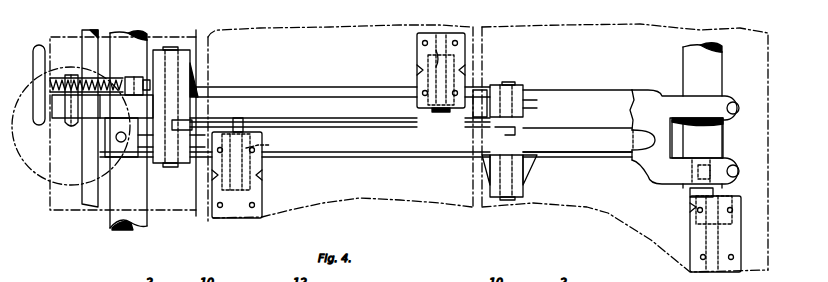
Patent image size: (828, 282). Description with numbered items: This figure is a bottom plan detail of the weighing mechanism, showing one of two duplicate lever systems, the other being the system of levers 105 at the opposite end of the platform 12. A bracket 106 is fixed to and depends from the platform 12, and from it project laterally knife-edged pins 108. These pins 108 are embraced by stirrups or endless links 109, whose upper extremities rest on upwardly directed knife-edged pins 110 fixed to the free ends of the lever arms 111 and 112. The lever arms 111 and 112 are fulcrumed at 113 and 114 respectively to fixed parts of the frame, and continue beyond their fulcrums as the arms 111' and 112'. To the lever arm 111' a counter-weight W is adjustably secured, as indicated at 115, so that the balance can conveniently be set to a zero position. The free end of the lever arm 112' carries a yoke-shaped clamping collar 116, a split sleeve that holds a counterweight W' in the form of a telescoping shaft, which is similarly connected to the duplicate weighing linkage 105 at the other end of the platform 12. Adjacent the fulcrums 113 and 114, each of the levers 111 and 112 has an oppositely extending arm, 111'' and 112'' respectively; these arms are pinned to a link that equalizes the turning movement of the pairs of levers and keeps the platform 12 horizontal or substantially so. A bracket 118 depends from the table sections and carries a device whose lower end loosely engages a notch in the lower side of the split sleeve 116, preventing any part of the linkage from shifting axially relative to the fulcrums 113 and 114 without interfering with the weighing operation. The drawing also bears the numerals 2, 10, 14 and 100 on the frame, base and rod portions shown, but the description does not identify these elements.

The frame section 2 is at (180, 208).
The frame 10 is at (205, 38).
The platform 12 is at (304, 202).
The rod 14 is at (112, 222).
The plate 100 is at (85, 204).
The system of levers 105 is at (415, 108).
The bracket 106 is at (256, 192).
The knife-edged pins 108 is at (443, 114).
The stirrups or endless links 109 is at (276, 141).
The upwardly directed knife-edged pins 110 is at (236, 119).
The lever arm 111 is at (340, 114).
The lever arm 111' is at (102, 116).
The oppositely extending arm 111'' is at (224, 83).
The lever arm 112 is at (366, 138).
The lever arm 112' is at (577, 167).
The oppositely extending arm 112'' is at (532, 137).
The fulcrum 113 is at (173, 167).
The fulcrum 114 is at (510, 83).
The adjustable securing means 115 is at (112, 82).
The yoke-shaped clamping collar 116 is at (651, 170).
The bracket 118 is at (695, 237).
The counter-weight W is at (71, 129).
The counterweight W' is at (715, 120).